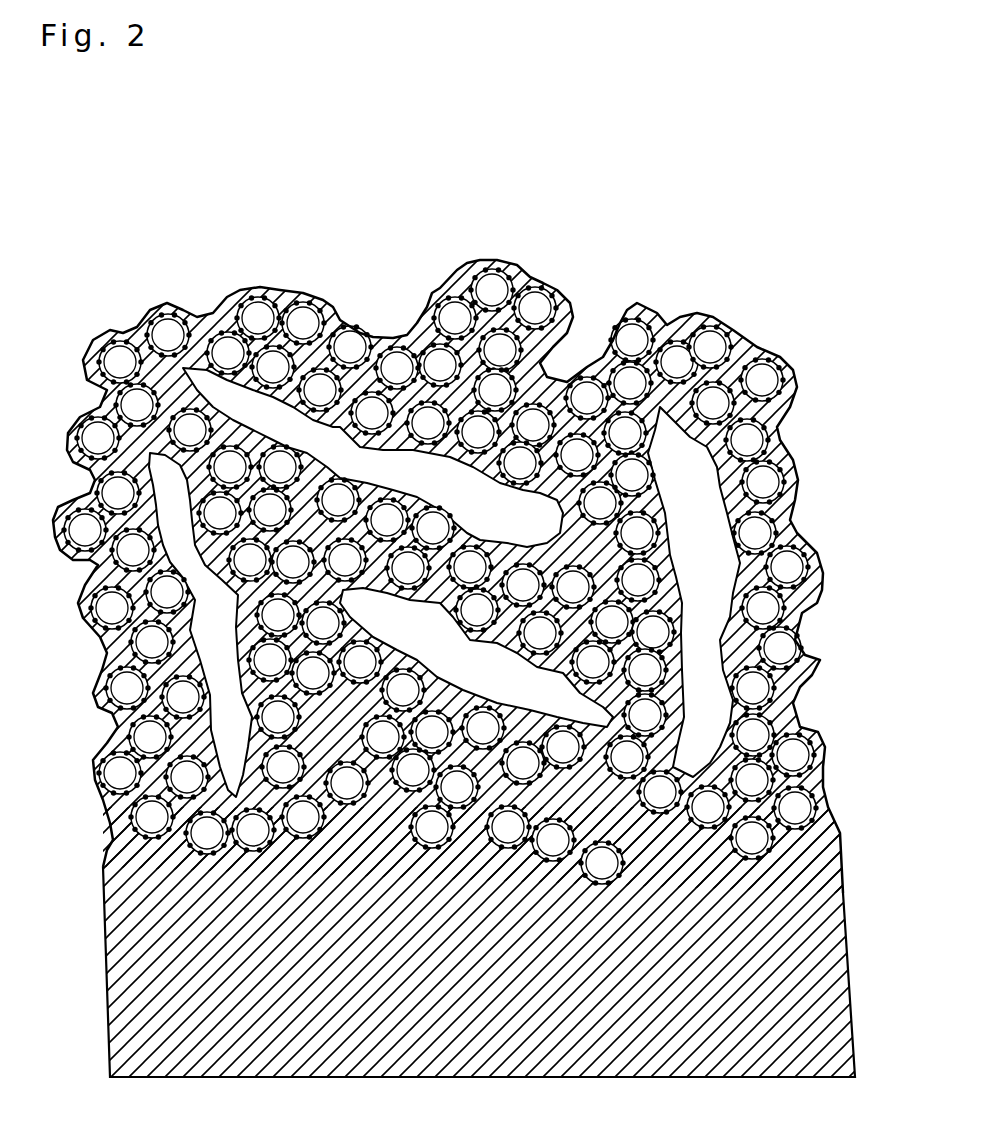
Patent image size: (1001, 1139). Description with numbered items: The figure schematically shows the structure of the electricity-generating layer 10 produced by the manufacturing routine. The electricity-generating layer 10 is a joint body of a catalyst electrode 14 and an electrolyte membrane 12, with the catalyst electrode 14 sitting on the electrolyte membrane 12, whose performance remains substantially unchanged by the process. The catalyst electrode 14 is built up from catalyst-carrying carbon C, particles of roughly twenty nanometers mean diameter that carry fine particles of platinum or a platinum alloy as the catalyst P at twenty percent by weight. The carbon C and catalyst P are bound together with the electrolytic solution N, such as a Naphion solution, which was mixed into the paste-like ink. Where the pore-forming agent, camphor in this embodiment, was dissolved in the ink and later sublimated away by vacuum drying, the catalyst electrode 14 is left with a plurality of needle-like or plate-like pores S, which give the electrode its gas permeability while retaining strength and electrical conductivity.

The electricity-generating layer 10 is at (480, 587).
The electrolyte membrane 12 is at (846, 893).
The catalyst electrode 14 is at (480, 542).
The catalyst P is at (258, 313).
The catalyst-carrying carbon C is at (272, 300).
The electrolytic solution N is at (338, 282).
The pores S is at (387, 467).